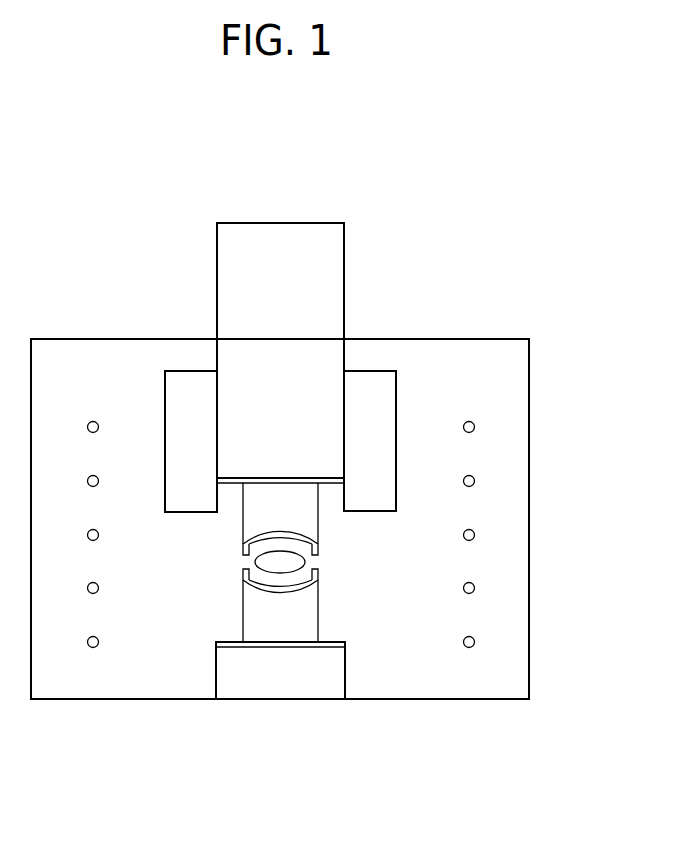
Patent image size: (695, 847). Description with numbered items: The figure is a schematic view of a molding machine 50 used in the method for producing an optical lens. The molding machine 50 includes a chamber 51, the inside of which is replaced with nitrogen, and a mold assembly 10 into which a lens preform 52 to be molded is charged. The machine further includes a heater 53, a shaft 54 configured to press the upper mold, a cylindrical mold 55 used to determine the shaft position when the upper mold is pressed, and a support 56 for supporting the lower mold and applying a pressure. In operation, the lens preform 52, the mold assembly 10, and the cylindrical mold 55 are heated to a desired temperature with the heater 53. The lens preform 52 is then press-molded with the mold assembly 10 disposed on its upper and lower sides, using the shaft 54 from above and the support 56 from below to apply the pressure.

The mold assembly 10 is at (264, 562).
The molding machine 50 is at (493, 370).
The chamber 51 is at (510, 406).
The lens preform 52 is at (307, 560).
The heater 53 is at (475, 535).
The shaft 54 is at (322, 292).
The cylindrical mold 55 is at (188, 385).
The support 56 is at (288, 690).